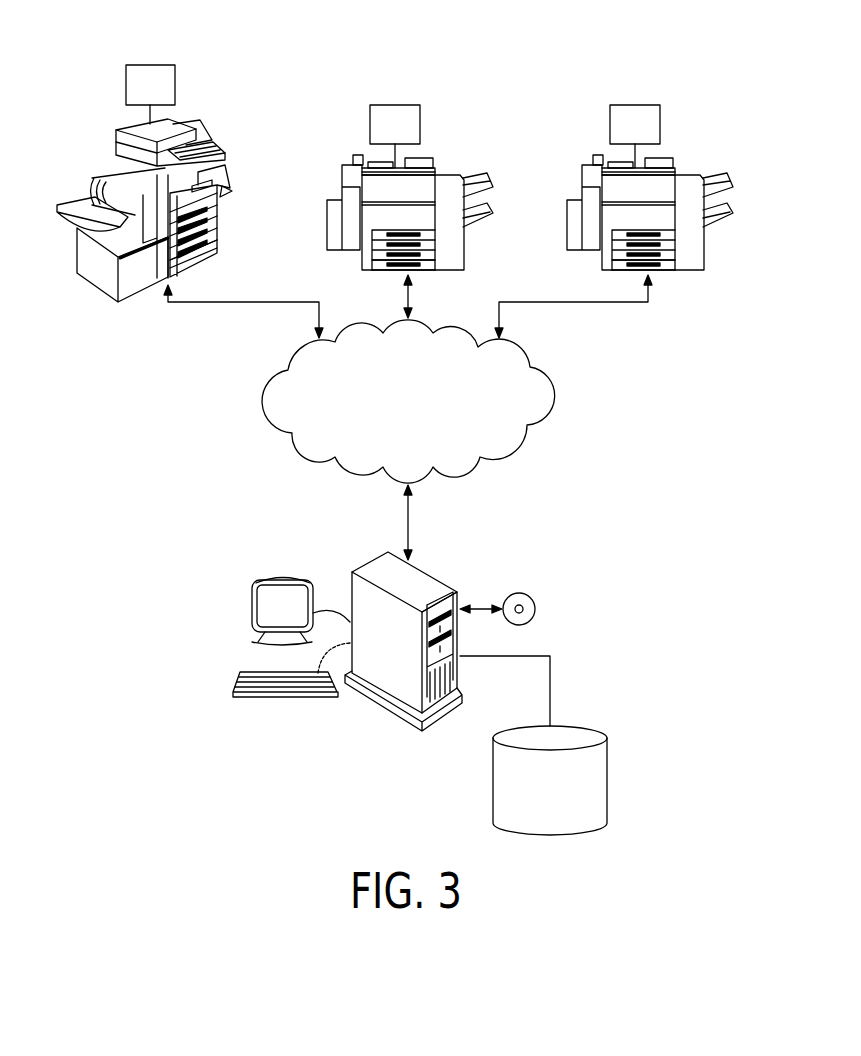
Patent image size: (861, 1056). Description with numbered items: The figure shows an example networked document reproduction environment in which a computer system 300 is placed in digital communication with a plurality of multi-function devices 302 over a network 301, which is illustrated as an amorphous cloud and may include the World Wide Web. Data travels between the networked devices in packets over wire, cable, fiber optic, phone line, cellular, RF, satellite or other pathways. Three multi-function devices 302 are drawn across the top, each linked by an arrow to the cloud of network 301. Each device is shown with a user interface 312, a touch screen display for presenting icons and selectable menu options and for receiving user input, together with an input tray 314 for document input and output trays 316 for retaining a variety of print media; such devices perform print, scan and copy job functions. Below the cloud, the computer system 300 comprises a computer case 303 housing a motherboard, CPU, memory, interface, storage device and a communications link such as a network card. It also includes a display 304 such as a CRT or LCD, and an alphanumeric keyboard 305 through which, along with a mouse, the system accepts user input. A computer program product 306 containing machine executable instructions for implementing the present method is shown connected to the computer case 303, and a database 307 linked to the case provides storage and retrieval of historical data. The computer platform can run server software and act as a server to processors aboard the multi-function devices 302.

The computer system 300 is at (545, 557).
The network 301 is at (555, 398).
The multi-function device 302 is at (210, 95).
The computer case 303 is at (440, 570).
The display 304 is at (283, 575).
The alphanumeric keyboard 305 is at (285, 700).
The computer program product 306 is at (533, 618).
The database 307 is at (587, 725).
The user interface 312 is at (150, 63).
The input tray 314 is at (227, 192).
The output trays 316 is at (207, 247).